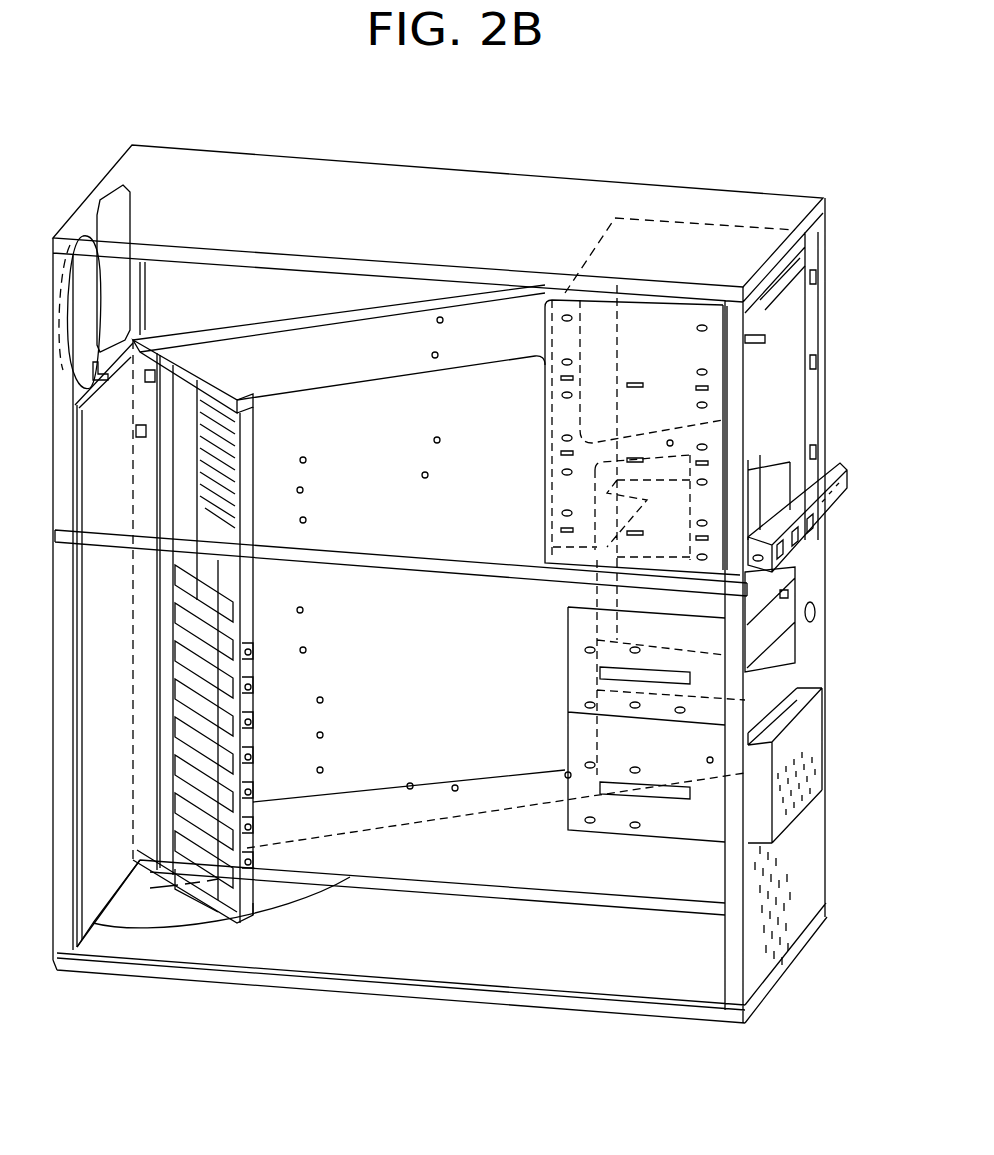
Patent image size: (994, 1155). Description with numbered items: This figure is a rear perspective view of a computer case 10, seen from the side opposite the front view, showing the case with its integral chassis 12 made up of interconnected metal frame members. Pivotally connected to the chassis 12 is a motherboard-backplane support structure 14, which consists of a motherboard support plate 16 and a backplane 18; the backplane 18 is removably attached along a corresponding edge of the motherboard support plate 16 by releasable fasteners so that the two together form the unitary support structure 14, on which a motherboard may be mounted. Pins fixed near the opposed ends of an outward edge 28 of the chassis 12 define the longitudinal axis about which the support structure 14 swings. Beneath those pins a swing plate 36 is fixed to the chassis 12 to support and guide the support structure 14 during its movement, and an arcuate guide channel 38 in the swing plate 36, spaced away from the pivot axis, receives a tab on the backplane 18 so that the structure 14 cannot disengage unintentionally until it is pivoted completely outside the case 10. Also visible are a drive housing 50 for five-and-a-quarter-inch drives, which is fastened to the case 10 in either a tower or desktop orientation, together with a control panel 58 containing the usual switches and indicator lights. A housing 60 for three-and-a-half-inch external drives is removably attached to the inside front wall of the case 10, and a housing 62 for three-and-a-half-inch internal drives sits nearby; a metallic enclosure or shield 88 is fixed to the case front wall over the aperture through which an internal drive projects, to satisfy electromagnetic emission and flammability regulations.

The computer case 10 is at (383, 162).
The chassis 12 is at (192, 192).
The motherboard-backplane support structure 14 is at (284, 374).
The motherboard support plate 16 is at (415, 388).
The backplane 18 is at (245, 612).
The outward edge 28 is at (130, 427).
The swing plate 36 is at (155, 913).
The arcuate guide channel 38 is at (290, 900).
The 5¼" drive housing 50 is at (545, 482).
The control panel 58 is at (851, 447).
The housing for 3½" external drives 60 is at (572, 662).
The housing for 3½" internal drives 62 is at (578, 752).
The metallic enclosure or shield 88 is at (826, 716).